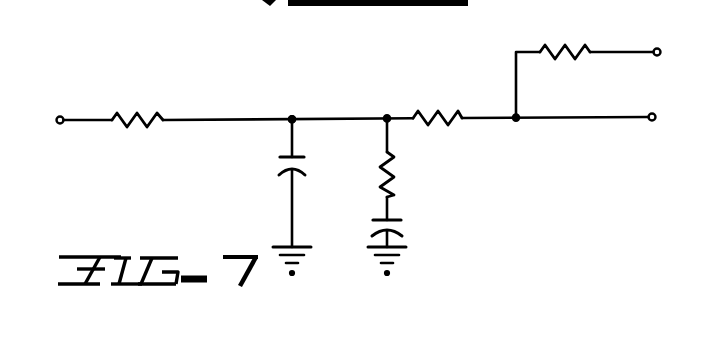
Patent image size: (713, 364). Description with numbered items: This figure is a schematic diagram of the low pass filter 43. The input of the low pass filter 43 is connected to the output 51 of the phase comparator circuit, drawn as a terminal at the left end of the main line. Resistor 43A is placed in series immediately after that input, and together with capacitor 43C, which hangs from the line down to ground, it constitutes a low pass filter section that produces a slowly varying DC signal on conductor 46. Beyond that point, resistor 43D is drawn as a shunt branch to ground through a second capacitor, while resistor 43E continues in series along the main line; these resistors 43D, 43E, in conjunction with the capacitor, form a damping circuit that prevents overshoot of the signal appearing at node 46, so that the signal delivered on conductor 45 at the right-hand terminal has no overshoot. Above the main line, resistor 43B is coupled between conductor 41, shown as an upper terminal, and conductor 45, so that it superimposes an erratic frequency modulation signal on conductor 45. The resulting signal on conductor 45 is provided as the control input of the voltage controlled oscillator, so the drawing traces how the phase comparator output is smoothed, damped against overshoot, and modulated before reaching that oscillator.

The output of phase comparator circuit 51 is at (94, 118).
The resistor 43A is at (156, 116).
The conductor 46 is at (293, 117).
The resistor 43E is at (441, 114).
The resistor 43B is at (571, 36).
The conductor 41 is at (670, 37).
The conductor 45 is at (670, 101).
The capacitor 43C is at (300, 176).
The resistor 43D is at (395, 184).
The low pass filter 43 is at (247, 146).